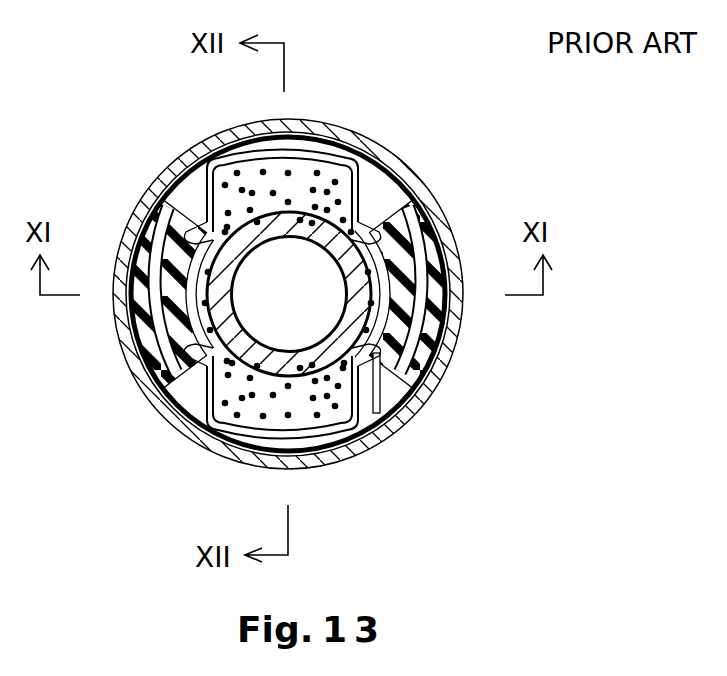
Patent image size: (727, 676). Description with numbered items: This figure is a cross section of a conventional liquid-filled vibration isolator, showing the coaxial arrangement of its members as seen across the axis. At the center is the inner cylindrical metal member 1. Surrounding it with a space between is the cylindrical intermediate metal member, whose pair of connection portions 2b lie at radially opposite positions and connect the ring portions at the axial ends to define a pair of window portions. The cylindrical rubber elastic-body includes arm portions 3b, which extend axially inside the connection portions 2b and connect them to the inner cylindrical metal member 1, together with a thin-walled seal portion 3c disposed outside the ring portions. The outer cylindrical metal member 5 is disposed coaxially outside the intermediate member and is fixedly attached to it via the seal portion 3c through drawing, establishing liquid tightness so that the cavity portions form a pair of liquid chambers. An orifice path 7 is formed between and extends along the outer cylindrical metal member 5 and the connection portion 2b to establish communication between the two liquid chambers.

The inner cylindrical metal member 1 is at (352, 170).
The outer cylindrical metal member 5 is at (436, 210).
The orifice path 7 is at (405, 358).
The connection portion 2b is at (170, 345).
The arm portion 3b is at (388, 350).
The thin-walled seal portion 3c is at (134, 311).